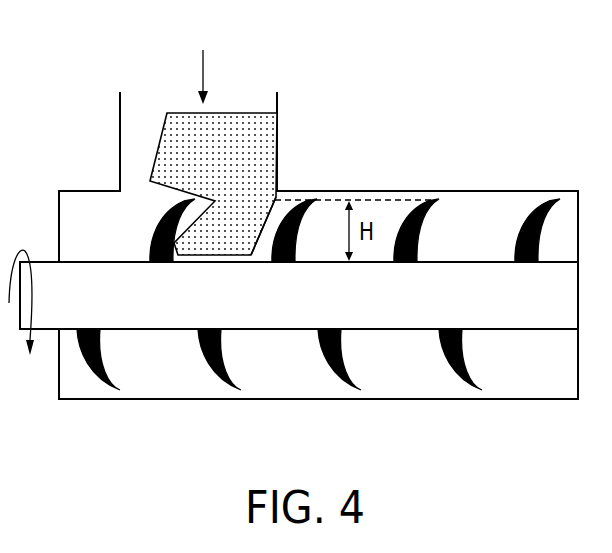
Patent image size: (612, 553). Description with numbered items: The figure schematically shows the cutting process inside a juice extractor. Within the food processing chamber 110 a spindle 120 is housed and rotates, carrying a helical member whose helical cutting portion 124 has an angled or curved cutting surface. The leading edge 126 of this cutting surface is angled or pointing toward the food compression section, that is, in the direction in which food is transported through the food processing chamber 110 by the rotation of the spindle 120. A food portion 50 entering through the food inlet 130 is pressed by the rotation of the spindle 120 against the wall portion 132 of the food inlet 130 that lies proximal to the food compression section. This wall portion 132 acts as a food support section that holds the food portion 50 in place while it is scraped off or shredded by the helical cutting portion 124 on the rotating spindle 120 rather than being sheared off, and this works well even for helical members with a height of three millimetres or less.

The food processing chamber 110 is at (533, 382).
The spindle 120 is at (40, 272).
The helical cutting portion 124 is at (85, 373).
The leading edge 126 is at (523, 220).
The food portion 50 is at (261, 117).
The food inlet 130 is at (205, 65).
The wall portion 132 is at (278, 164).